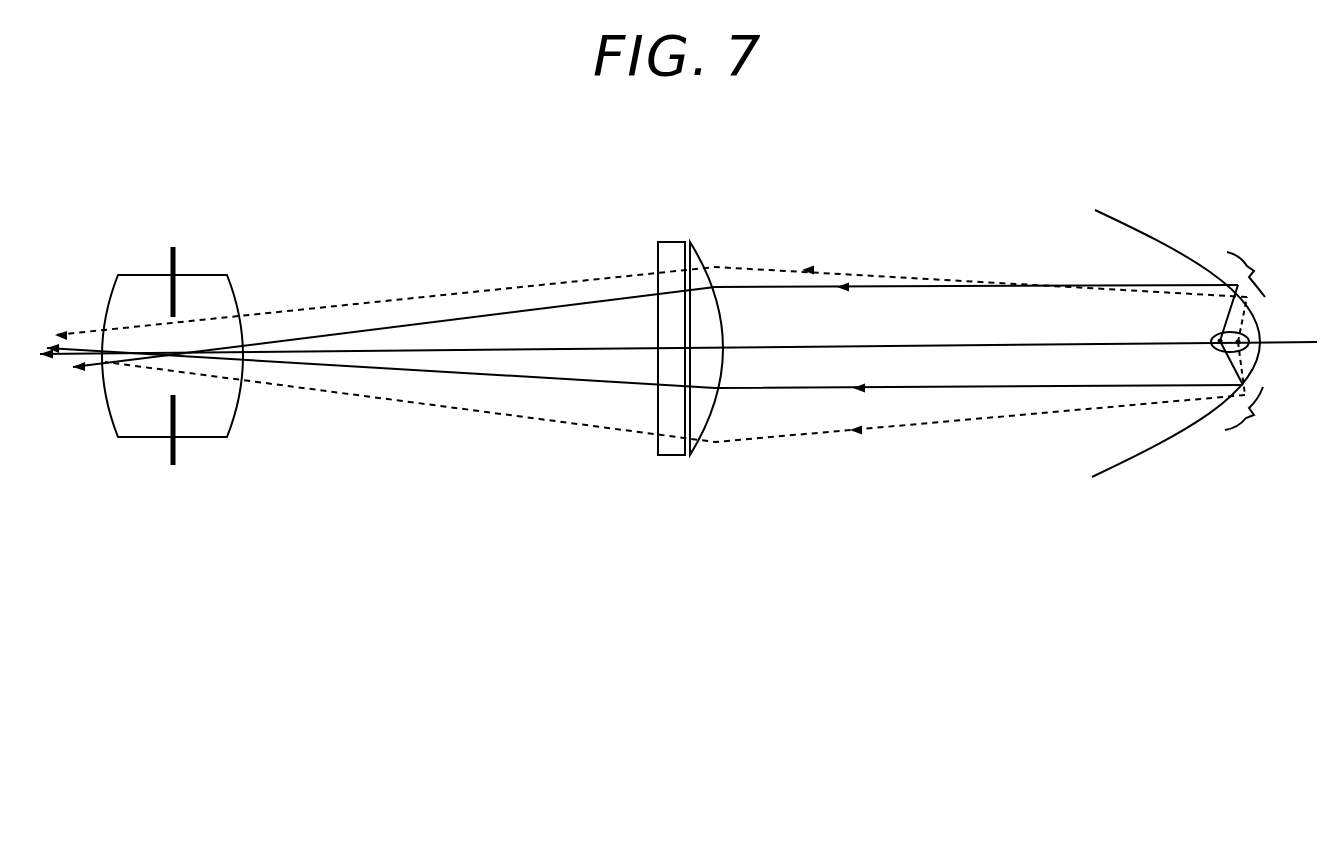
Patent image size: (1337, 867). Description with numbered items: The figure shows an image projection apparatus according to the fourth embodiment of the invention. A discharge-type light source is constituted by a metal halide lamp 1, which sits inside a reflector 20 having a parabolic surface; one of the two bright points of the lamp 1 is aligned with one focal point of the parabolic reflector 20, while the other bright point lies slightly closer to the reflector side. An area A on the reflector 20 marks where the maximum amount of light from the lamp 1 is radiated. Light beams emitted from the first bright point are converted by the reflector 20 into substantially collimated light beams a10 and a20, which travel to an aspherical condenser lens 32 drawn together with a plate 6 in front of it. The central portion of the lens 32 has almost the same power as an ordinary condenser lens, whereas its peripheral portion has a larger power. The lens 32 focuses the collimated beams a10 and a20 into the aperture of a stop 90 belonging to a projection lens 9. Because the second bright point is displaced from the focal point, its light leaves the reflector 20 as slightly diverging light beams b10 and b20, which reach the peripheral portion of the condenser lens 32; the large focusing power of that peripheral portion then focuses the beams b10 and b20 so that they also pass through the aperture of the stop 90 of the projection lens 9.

The projection lens 9 is at (148, 275).
The stop 90 is at (175, 449).
The plane-parallel plate 6 is at (672, 242).
The aspherical condenser lens 32 is at (698, 242).
The reflector 20 is at (1157, 228).
The metal halide lamp 1 is at (1212, 336).
The collimated light beam a10 is at (655, 327).
The collimated light beam a20 is at (645, 368).
The slightly diverging light beam b10 is at (651, 289).
The slightly diverging light beam b20 is at (675, 414).
The area A is at (1250, 341).